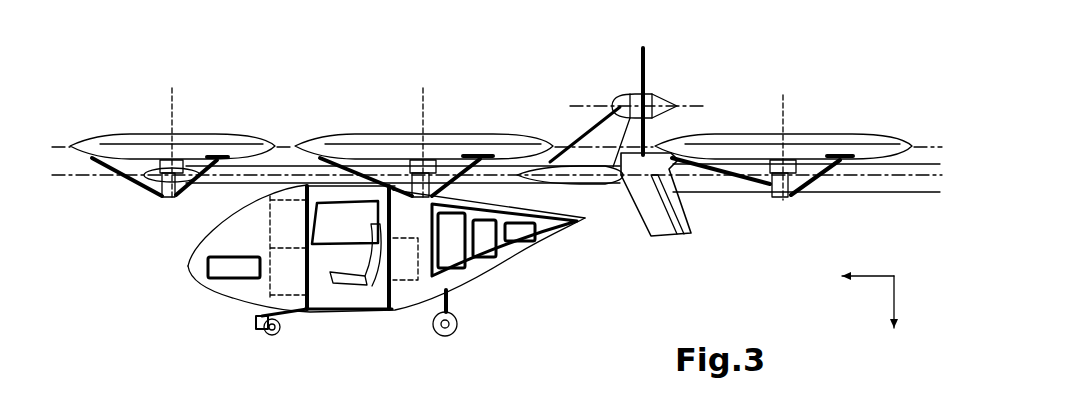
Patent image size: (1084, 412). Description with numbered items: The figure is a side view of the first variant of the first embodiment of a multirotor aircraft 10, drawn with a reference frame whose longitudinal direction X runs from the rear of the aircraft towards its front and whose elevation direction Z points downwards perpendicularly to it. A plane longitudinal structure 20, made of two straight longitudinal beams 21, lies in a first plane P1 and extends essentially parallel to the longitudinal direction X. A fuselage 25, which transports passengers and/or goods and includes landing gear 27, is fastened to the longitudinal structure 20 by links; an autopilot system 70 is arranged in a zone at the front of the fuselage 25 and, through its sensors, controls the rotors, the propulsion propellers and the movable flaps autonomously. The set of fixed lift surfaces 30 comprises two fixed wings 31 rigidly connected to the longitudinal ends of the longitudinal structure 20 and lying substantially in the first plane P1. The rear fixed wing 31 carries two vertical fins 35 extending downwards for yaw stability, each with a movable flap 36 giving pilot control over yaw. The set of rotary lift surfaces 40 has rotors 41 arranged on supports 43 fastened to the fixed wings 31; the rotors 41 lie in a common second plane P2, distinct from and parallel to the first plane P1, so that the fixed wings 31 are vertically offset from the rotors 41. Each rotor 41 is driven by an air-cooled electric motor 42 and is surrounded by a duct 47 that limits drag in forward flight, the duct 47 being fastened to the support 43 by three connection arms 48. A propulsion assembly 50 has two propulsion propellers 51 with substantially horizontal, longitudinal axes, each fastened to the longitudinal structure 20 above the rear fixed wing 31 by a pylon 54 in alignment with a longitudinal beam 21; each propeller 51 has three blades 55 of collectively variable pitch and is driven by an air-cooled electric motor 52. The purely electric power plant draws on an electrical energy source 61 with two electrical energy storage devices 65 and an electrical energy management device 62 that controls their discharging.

The multirotor aircraft 10 is at (146, 324).
The longitudinal structure 20 is at (347, 286).
The longitudinal beam 21 is at (250, 208).
The fuselage 25 is at (256, 300).
The landing gear 27 is at (276, 335).
The set of fixed lift surfaces 30 is at (486, 145).
The fixed wing 31 is at (152, 142).
The vertical fin 35 is at (661, 238).
The movable flap 36 is at (682, 238).
The set of rotary lift surfaces 40 is at (499, 124).
The rotor 41 is at (189, 107).
The electric motor 42 is at (165, 162).
The support 43 is at (582, 186).
The duct 47 is at (240, 135).
The connection arm 48 is at (400, 175).
The propulsion assembly 50 is at (692, 152).
The propulsion propeller 51 is at (724, 80).
The electric motor 52 is at (641, 92).
The pylon 54 is at (599, 124).
The blade 55 is at (648, 67).
The electrical energy source 61 is at (399, 262).
The electrical energy management device 62 is at (518, 243).
The electrical energy storage device 65 is at (461, 256).
The autopilot system 70 is at (224, 276).
The first plane P1 is at (922, 186).
The second plane P2 is at (922, 138).
The longitudinal direction X is at (853, 279).
The elevation direction Z is at (897, 320).